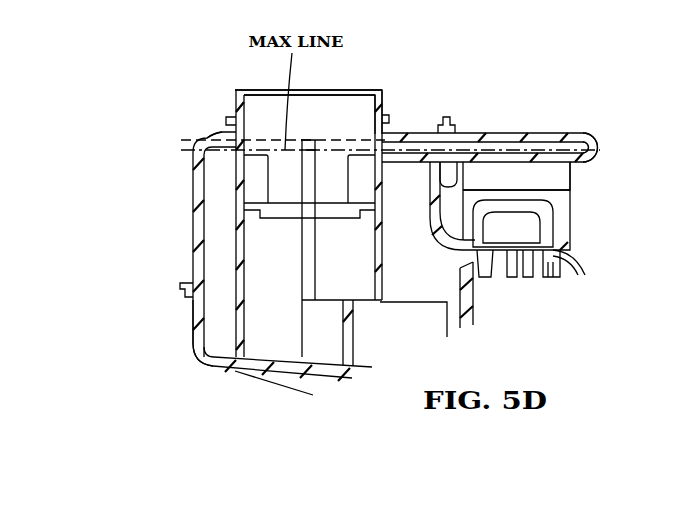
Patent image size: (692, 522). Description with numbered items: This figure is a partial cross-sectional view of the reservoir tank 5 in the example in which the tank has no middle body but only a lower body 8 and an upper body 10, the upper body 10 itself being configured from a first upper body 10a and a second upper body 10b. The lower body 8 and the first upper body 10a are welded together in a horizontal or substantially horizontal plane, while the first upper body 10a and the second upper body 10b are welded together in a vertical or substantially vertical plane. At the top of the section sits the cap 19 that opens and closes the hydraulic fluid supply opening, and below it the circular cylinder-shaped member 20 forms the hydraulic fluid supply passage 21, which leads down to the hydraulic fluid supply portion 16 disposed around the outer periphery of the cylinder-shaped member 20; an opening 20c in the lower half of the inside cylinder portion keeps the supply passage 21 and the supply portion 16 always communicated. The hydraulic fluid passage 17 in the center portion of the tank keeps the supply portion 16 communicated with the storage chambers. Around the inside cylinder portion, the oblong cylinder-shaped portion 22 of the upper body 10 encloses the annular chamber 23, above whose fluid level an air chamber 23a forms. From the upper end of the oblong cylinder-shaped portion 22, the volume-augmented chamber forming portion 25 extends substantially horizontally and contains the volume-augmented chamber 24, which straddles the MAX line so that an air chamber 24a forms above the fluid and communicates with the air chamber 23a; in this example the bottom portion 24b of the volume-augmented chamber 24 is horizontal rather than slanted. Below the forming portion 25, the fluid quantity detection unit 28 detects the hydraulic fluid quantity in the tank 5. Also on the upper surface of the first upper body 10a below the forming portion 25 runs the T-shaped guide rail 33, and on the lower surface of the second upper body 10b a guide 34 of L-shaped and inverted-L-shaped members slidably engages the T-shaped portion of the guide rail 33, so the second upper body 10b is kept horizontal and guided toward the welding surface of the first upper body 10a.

The reservoir tank 5 is at (161, 159).
The lower body 8 is at (195, 343).
The upper body 10 is at (463, 54).
The first upper body 10a is at (522, 113).
The second upper body 10b is at (536, 198).
The hydraulic fluid supply portion 16 is at (220, 342).
The hydraulic fluid passage 17 is at (463, 258).
The cap 19 is at (345, 90).
The circular cylinder-shaped member 20 is at (225, 258).
The opening 20c is at (380, 302).
The hydraulic fluid supply passage 21 is at (277, 312).
The oblong cylinder-shaped portion 22 is at (447, 188).
The chamber 23 is at (215, 196).
The air chamber 23a is at (220, 150).
The volume-augmented chamber 24 is at (600, 150).
The air chamber 24a is at (570, 147).
The bottom portion 24b is at (523, 262).
The volume-augmented chamber forming portion 25 is at (592, 140).
The fluid quantity detection unit 28 is at (563, 250).
The guide rail 33 is at (550, 210).
The guide 34 is at (573, 177).